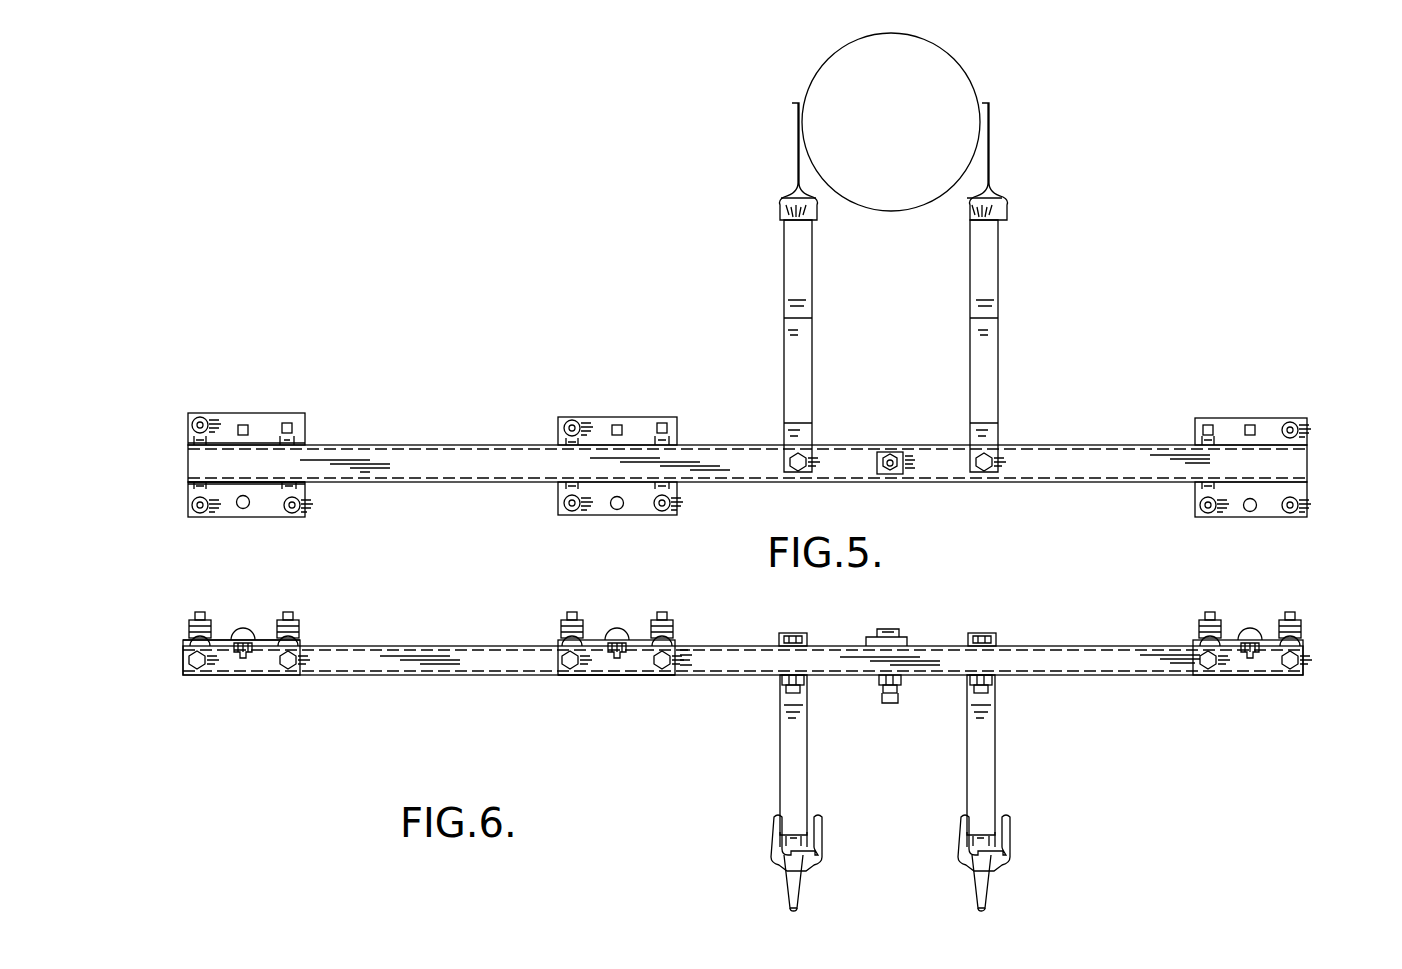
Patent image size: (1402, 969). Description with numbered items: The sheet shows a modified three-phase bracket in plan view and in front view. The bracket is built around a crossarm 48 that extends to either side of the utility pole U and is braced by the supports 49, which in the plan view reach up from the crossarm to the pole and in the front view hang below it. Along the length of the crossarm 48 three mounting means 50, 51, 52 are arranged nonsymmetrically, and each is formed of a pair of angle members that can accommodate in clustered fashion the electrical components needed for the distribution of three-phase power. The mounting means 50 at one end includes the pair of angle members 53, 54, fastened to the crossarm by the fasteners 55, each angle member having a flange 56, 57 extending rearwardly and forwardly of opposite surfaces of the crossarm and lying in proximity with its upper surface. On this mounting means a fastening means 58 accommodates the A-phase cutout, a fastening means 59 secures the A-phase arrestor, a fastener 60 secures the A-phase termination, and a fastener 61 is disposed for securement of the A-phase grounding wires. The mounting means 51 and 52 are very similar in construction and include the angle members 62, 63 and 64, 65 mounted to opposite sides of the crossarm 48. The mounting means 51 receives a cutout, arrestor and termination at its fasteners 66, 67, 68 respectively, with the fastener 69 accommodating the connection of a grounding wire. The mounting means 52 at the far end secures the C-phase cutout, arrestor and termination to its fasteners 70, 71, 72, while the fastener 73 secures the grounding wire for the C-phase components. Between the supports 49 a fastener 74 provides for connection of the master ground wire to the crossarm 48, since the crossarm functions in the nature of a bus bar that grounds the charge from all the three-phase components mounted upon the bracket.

In FIG. 5, the utility pole U is at (962, 62).
In FIG. 5, the crossarm 48 is at (1047, 468).
In FIG. 6, the crossarm 48 is at (1063, 666).
In FIG. 5, the supports 49 is at (968, 244).
In FIG. 6, the supports 49 is at (964, 783).
In FIG. 5, the mounting means 50 is at (274, 468).
In FIG. 6, the mounting means 50 is at (259, 661).
In FIG. 5, the mounting means 51 is at (610, 462).
In FIG. 6, the mounting means 51 is at (642, 658).
In FIG. 5, the mounting means 52 is at (1268, 468).
In FIG. 6, the mounting means 52 is at (1283, 669).
In FIG. 5, the angle member 53 is at (306, 430).
In FIG. 5, the angle member 54 is at (305, 493).
In FIG. 6, the angle member 54 is at (225, 663).
In FIG. 5, the fasteners 55 is at (184, 443).
In FIG. 6, the fasteners 55 is at (198, 660).
In FIG. 5, the flange 56 is at (223, 413).
In FIG. 5, the flange 57 is at (225, 517).
In FIG. 5, the fastening means 58 is at (200, 418).
In FIG. 5, the fastening means 59 is at (200, 514).
In FIG. 5, the fastener 60 is at (292, 514).
In FIG. 5, the fastener 61 is at (243, 510).
In FIG. 6, the fastener 61 is at (248, 632).
In FIG. 5, the angle member 62 is at (558, 423).
In FIG. 5, the angle member 63 is at (563, 512).
In FIG. 6, the angle member 63 is at (638, 660).
In FIG. 5, the angle member 64 is at (1191, 414).
In FIG. 5, the angle member 65 is at (1195, 517).
In FIG. 6, the angle member 65 is at (1238, 666).
In FIG. 5, the fastener 66 is at (580, 422).
In FIG. 5, the fastener 67 is at (582, 512).
In FIG. 6, the fastener 67 is at (567, 628).
In FIG. 5, the fastener 68 is at (662, 512).
In FIG. 6, the fastener 68 is at (678, 634).
In FIG. 5, the fastener 69 is at (617, 511).
In FIG. 5, the fastener 70 is at (1290, 424).
In FIG. 5, the fastener 71 is at (1305, 517).
In FIG. 5, the fastener 72 is at (1212, 518).
In FIG. 5, the fastener 73 is at (1248, 512).
In FIG. 5, the fastener 74 is at (893, 452).
In FIG. 6, the fastener 74 is at (900, 640).